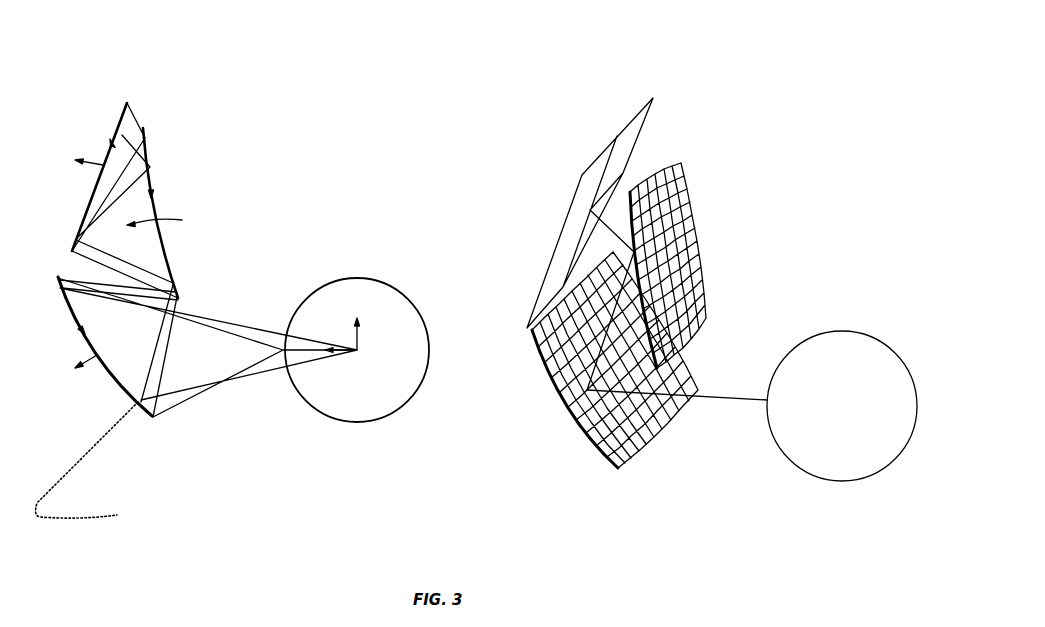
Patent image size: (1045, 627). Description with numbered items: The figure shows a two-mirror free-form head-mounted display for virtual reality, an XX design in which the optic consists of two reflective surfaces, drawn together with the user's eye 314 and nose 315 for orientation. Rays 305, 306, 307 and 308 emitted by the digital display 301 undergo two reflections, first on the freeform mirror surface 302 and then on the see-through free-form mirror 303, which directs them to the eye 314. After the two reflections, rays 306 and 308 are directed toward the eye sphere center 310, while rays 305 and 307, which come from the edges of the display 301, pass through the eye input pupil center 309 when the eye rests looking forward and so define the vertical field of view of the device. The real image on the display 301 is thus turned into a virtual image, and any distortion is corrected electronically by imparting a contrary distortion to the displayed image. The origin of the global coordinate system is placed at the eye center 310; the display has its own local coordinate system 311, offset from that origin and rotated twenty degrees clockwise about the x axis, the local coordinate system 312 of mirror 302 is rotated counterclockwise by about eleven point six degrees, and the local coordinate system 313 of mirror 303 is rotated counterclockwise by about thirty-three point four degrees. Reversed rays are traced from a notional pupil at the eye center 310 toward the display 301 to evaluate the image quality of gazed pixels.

The digital display 301 is at (127, 103).
The freeform mirror surface 302 is at (150, 193).
The see-through free-form mirror 303 is at (77, 318).
The ray 305 is at (130, 115).
The ray 306 is at (122, 140).
The ray 307 is at (167, 287).
The ray 308 is at (158, 273).
The eye input pupil center 309 is at (283, 350).
The eye sphere center 310 is at (357, 350).
The local coordinate system for display 311 is at (103, 167).
The local coordinate system for mirror 302 312 is at (171, 221).
The local coordinate system for mirror 303 313 is at (97, 355).
The eye 314 is at (382, 282).
The nose 315 is at (63, 472).